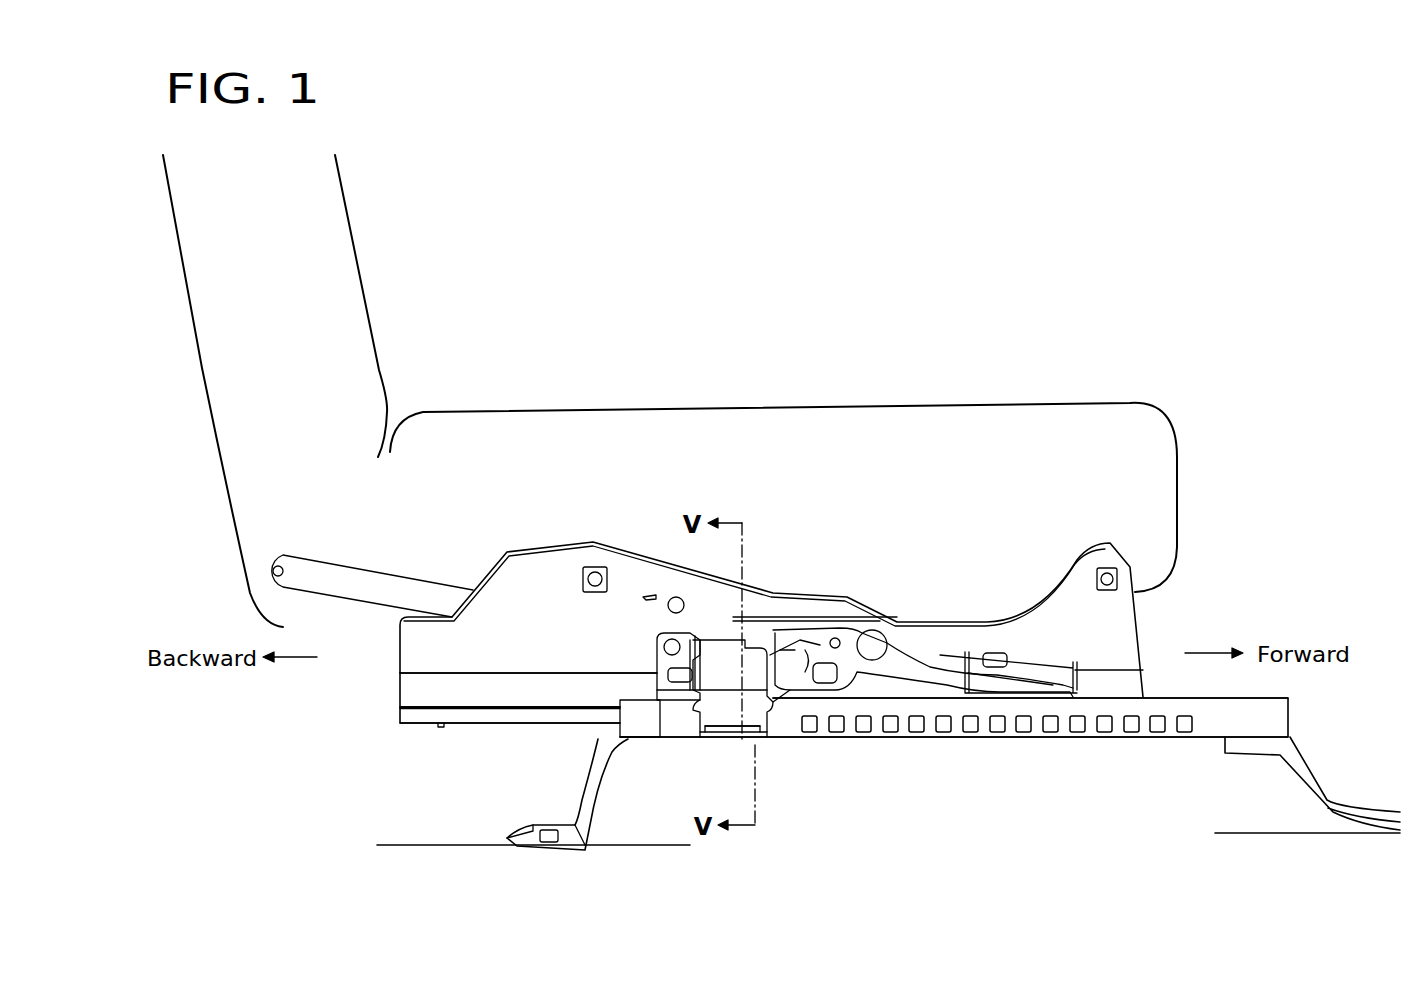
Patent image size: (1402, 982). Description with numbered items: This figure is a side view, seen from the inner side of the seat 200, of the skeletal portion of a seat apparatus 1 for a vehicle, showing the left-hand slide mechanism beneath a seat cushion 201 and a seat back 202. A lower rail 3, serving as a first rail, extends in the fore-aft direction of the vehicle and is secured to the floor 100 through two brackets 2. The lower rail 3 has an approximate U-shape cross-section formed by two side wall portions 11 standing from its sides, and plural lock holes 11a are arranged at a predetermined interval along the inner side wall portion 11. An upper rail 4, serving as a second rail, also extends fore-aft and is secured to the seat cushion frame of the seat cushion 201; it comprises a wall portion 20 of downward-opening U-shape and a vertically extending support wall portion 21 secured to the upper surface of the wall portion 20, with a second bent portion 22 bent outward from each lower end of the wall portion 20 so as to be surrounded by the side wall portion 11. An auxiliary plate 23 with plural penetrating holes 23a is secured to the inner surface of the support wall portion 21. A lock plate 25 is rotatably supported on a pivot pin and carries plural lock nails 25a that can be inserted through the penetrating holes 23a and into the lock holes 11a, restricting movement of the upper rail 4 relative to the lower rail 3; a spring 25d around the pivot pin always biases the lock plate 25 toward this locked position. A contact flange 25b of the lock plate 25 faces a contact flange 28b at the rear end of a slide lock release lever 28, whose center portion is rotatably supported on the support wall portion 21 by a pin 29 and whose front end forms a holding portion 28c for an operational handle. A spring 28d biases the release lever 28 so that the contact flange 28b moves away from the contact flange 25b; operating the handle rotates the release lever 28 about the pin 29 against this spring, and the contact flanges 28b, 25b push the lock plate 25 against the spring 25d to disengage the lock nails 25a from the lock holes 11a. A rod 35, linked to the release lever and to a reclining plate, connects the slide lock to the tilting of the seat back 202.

The seat apparatus 1 is at (1135, 543).
The bracket 2 is at (603, 820).
The lower rail 3 is at (1297, 710).
The upper rail 4 is at (387, 670).
The side wall portion 11 is at (1205, 728).
The lock hole 11a is at (835, 738).
The wall portion 20 is at (400, 693).
The support wall portion 21 is at (453, 663).
The second bent portion 22 is at (470, 718).
The auxiliary plate 23 is at (670, 743).
The penetrating hole 23a is at (760, 737).
The lock plate 25 is at (690, 704).
The lock nail 25a is at (707, 737).
The contact flange 25b is at (733, 633).
The spring 25d is at (790, 657).
The slide lock release lever 28 is at (855, 622).
The contact flange 28b is at (733, 686).
The holding portion 28c is at (1085, 668).
The spring 28d is at (1017, 653).
The pin 29 is at (898, 622).
The rod 35 is at (350, 575).
The floor 100 is at (462, 848).
The seat 200 is at (513, 307).
The seat cushion 201 is at (793, 408).
The seat back 202 is at (352, 237).